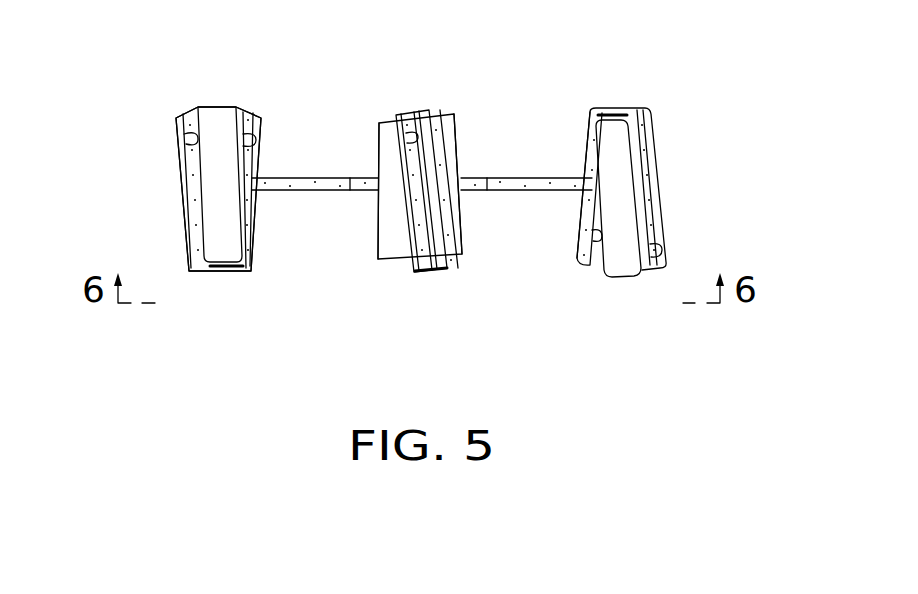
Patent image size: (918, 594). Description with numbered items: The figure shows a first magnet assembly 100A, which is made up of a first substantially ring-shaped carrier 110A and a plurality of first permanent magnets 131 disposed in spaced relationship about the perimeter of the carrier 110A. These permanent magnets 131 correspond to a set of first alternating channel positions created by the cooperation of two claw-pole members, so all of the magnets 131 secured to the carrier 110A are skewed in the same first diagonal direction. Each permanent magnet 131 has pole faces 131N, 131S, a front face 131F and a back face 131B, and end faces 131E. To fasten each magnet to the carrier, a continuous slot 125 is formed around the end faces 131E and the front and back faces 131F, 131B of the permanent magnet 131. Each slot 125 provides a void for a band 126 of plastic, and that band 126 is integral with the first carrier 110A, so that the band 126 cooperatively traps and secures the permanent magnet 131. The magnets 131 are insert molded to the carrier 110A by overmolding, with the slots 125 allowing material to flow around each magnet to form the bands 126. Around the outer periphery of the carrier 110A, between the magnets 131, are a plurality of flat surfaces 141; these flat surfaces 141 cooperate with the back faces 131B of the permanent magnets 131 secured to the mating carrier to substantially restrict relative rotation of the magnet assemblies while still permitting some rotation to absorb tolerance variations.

The first magnet assembly 100A is at (672, 88).
The first substantially ring-shaped carrier 110A is at (292, 179).
The flat surfaces 141 is at (310, 191).
The permanent magnet 131 is at (203, 97).
The pole face 131N is at (220, 204).
The front face 131F is at (187, 240).
The back face 131B is at (252, 220).
The pole face 131S is at (378, 135).
The end face 131E is at (192, 118).
The continuous slot 125 is at (247, 146).
The band 126 is at (193, 184).